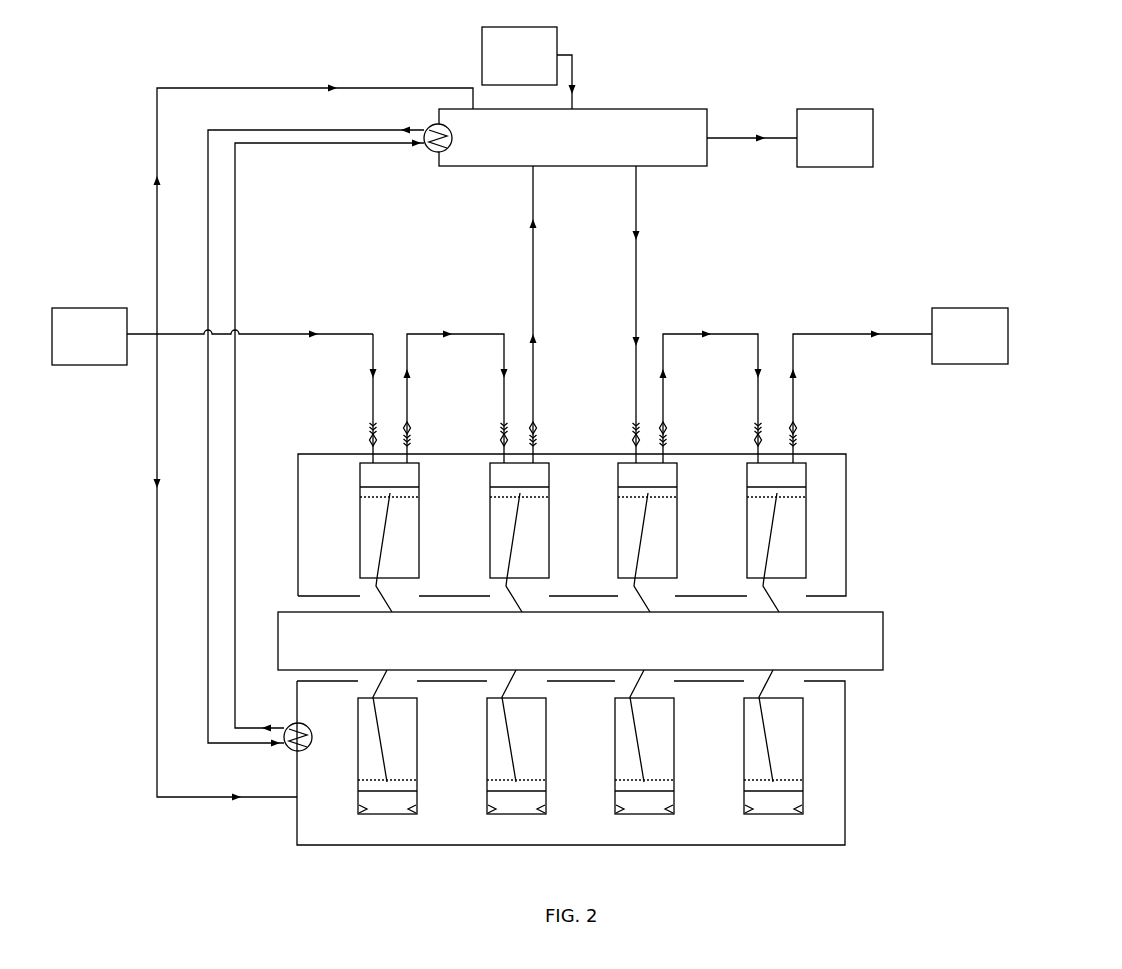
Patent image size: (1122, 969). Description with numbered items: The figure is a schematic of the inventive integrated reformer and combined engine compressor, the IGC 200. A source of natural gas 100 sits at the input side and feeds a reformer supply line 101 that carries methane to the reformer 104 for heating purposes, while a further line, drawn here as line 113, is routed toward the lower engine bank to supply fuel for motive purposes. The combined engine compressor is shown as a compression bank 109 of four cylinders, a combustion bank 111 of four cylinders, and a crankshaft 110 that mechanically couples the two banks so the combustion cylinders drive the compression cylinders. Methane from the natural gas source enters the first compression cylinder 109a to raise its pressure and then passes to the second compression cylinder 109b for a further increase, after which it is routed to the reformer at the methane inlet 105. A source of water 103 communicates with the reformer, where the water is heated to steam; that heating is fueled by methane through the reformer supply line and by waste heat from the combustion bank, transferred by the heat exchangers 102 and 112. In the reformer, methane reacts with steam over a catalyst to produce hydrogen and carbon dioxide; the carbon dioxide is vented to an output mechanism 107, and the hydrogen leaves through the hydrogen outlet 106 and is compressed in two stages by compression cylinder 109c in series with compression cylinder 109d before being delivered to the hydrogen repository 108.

The source of natural gas 100 is at (106, 346).
The reformer supply line 101 is at (151, 221).
The heat exchanger 102 is at (428, 156).
The source of water 103 is at (536, 66).
The reformer 104 is at (589, 151).
The methane inlet 105 is at (545, 197).
The hydrogen outlet 106 is at (646, 194).
The output mechanism 107 is at (852, 149).
The hydrogen repository 108 is at (987, 347).
The compression bank 109 is at (853, 511).
The first compression cylinder 109a is at (355, 531).
The second compression cylinder 109b is at (483, 540).
The compression cylinder 109c is at (681, 554).
The compression cylinder 109d is at (811, 561).
The crankshaft 110 is at (888, 642).
The combustion bank 111 is at (850, 780).
The heat exchanger 112 is at (284, 717).
The return line 113 is at (150, 614).
The IGC 200 is at (1031, 192).